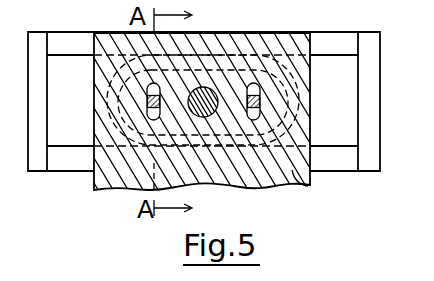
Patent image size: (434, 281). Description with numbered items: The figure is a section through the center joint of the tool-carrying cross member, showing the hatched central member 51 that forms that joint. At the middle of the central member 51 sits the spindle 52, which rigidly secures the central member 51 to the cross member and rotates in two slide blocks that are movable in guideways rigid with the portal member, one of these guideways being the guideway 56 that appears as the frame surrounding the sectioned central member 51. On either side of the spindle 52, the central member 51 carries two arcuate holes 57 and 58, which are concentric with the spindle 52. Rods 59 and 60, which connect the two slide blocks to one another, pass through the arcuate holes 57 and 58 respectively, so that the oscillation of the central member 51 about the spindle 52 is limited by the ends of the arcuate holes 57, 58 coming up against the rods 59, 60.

The central member 51 is at (308, 189).
The spindle 52 is at (205, 88).
The guideway 56 is at (68, 43).
The arcuate hole 57 is at (150, 115).
The arcuate hole 58 is at (255, 114).
The rod 59 is at (148, 102).
The rod 60 is at (257, 101).